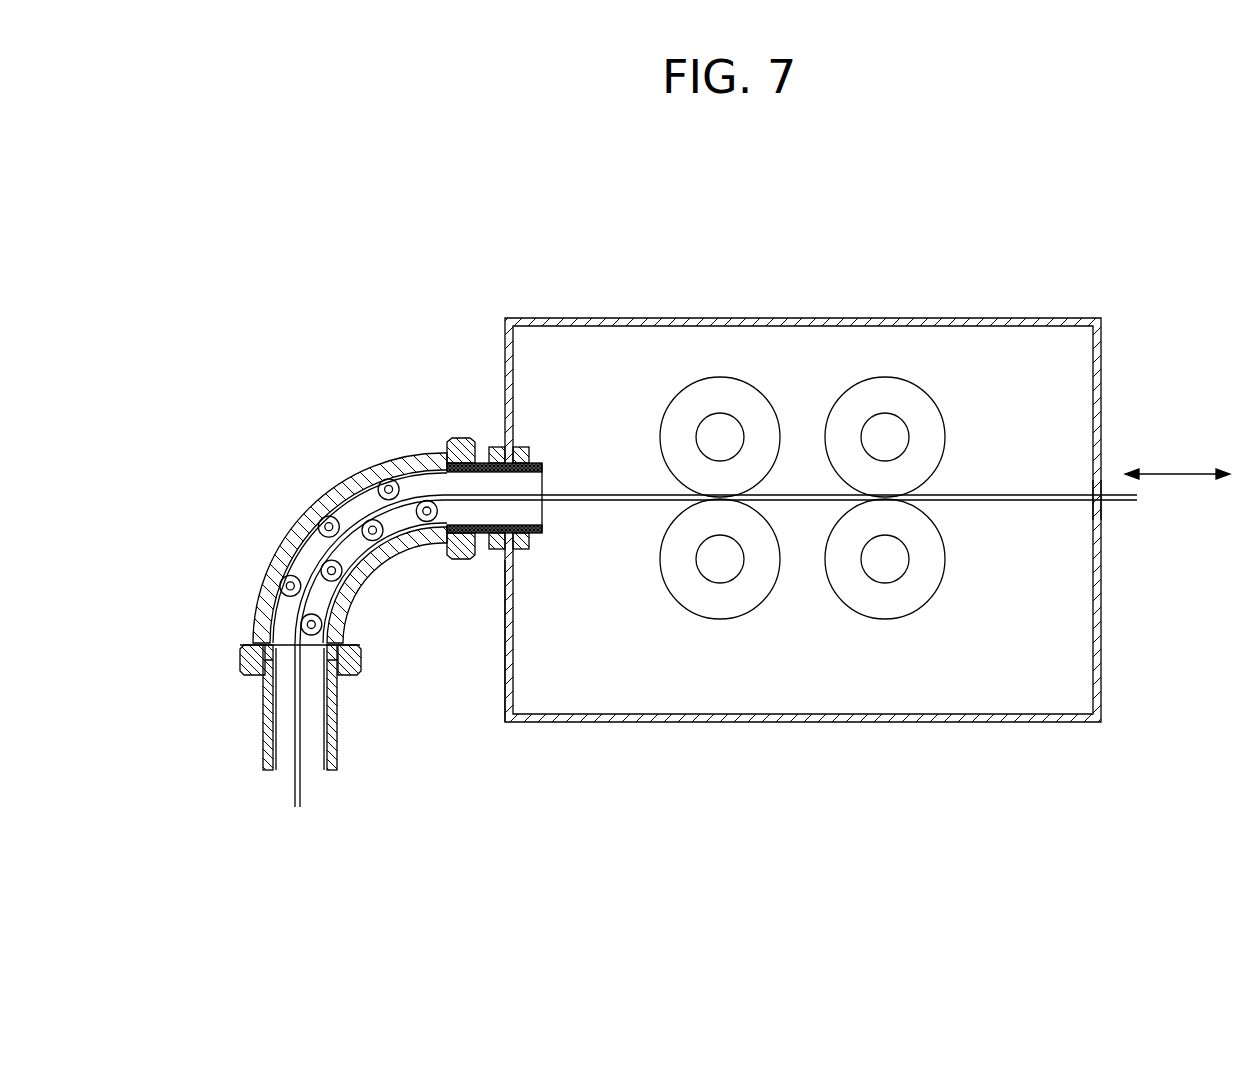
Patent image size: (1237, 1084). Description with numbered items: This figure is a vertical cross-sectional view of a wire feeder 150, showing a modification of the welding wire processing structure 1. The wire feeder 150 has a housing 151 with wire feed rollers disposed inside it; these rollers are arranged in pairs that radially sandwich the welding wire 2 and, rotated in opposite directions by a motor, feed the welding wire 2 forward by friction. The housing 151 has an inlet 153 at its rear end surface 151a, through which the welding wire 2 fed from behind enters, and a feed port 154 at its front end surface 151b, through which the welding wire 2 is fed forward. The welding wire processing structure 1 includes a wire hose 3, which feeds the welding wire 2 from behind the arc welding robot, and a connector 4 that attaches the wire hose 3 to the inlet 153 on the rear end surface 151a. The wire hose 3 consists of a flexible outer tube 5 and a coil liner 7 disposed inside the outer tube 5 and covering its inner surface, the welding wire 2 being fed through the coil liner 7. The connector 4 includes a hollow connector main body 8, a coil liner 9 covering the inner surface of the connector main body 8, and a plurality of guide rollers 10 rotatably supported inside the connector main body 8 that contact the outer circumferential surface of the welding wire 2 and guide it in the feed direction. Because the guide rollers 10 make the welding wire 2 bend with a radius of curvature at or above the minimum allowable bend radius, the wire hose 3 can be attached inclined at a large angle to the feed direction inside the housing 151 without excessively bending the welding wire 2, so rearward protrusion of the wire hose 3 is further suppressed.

The welding wire processing structure 1 is at (651, 529).
The welding wire 2 is at (805, 503).
The wire hose 3 is at (250, 742).
The connector 4 is at (441, 424).
The outer tube 5 is at (337, 755).
The coil liner 7 is at (317, 707).
The connector main body 8 is at (307, 487).
The coil liner 9 is at (520, 515).
The guide rollers 10 is at (290, 598).
The wire feeder 150 is at (808, 463).
The housing 151 is at (975, 318).
The rear end surface 151a is at (505, 672).
The front end surface 151b is at (1101, 425).
The inlet 153 is at (514, 487).
The feed port 154 is at (1097, 512).